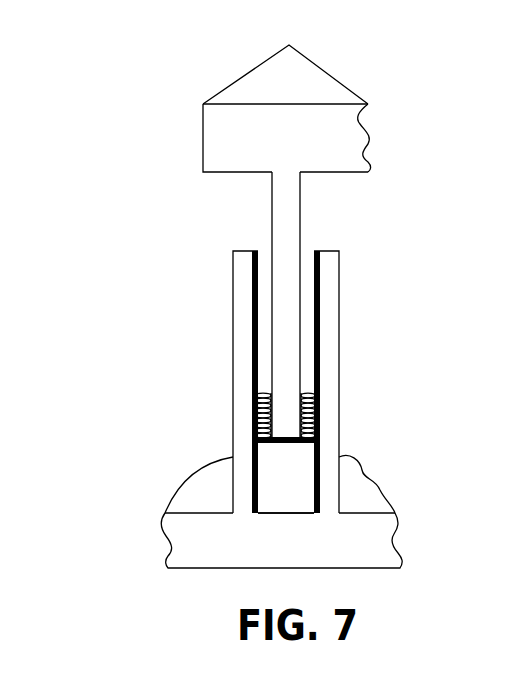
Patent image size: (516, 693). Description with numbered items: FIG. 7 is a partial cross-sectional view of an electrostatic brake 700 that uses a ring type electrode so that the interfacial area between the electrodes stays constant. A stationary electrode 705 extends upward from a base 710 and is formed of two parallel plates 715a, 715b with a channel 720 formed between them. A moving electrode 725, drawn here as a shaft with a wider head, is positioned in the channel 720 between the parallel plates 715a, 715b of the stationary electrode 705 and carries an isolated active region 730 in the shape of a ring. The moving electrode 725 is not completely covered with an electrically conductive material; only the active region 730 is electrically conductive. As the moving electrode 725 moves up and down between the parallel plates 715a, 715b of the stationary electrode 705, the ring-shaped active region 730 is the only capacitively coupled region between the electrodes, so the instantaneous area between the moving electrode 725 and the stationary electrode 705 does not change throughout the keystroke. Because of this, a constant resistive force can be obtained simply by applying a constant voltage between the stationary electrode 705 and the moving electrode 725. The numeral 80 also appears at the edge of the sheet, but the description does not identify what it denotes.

The electrostatic brake 700 is at (120, 188).
The stationary electrode 705 is at (333, 370).
The base 710 is at (377, 540).
The parallel plate 715a is at (250, 400).
The parallel plate 715b is at (326, 410).
The channel 720 is at (307, 255).
The moving electrode 725 is at (282, 218).
The active region 730 is at (268, 445).
The reference numeral 80 is at (505, 152).